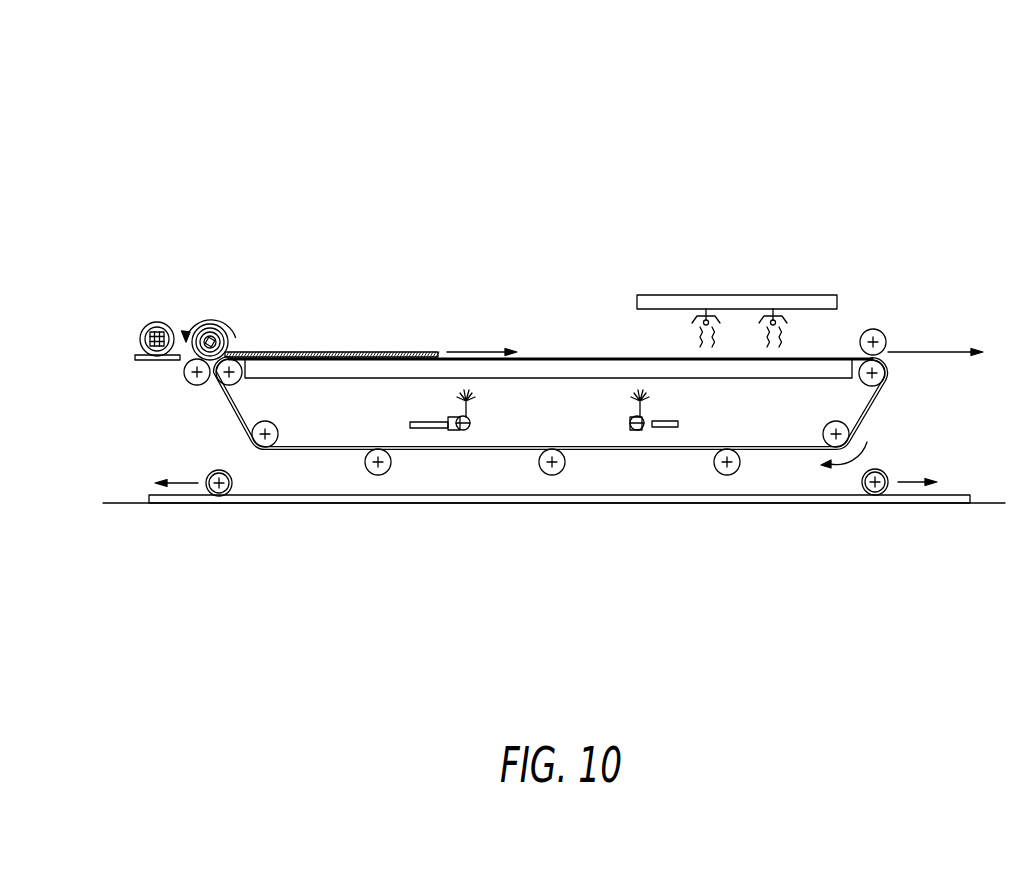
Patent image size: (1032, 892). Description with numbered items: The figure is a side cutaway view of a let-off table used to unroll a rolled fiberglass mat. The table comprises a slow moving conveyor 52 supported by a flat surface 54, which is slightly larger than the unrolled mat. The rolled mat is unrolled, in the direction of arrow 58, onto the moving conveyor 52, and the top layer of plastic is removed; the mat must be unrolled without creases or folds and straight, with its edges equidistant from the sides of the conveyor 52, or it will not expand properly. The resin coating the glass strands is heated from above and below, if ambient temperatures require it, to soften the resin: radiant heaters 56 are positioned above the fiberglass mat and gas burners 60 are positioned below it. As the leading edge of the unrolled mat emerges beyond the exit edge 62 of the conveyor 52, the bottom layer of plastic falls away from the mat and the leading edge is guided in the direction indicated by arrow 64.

The slow moving conveyor 52 is at (227, 325).
The flat surface 54 is at (563, 358).
The radiant heaters 56 is at (730, 290).
The arrow indicating unrolling direction 58 is at (168, 323).
The gas burners 60 is at (472, 436).
The exit edge 62 is at (888, 327).
The arrow indicating guiding direction 64 is at (715, 336).